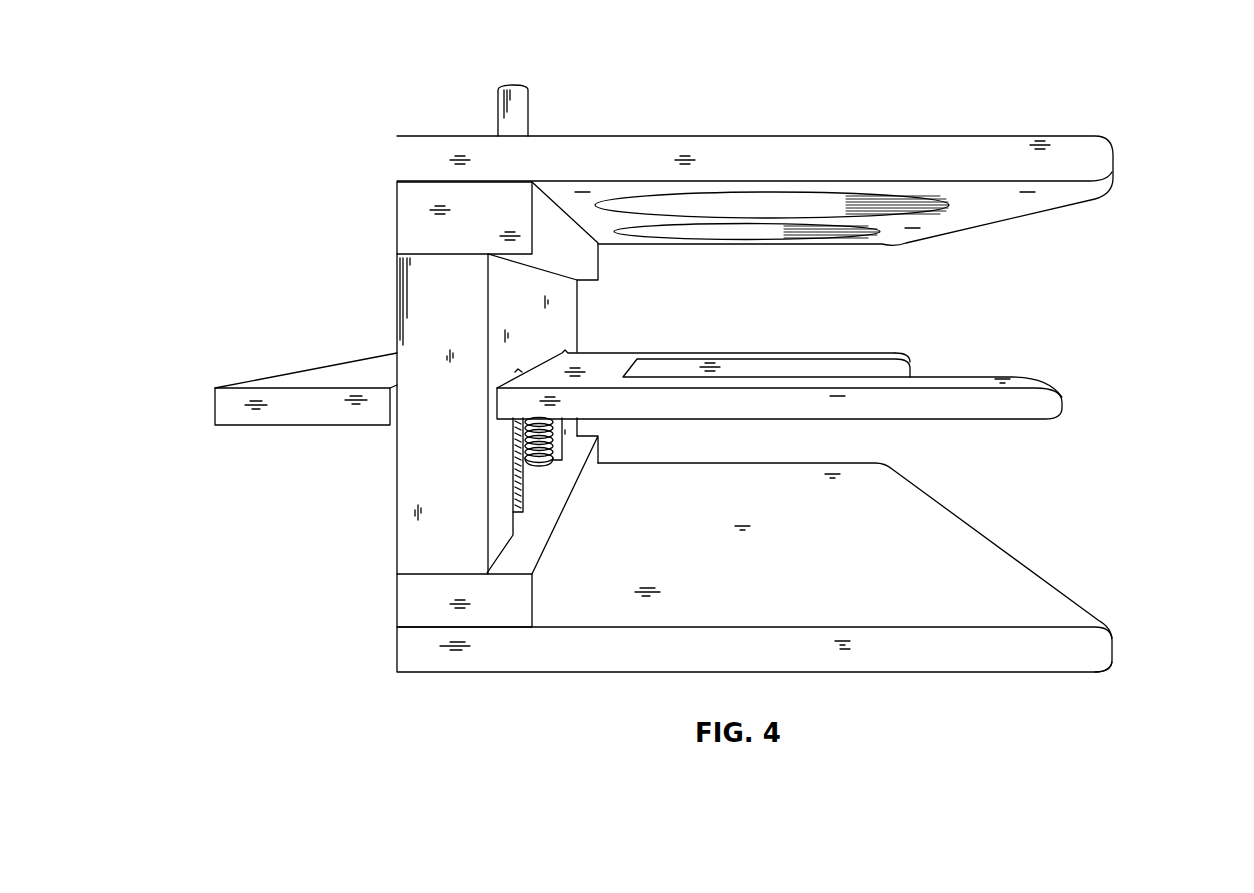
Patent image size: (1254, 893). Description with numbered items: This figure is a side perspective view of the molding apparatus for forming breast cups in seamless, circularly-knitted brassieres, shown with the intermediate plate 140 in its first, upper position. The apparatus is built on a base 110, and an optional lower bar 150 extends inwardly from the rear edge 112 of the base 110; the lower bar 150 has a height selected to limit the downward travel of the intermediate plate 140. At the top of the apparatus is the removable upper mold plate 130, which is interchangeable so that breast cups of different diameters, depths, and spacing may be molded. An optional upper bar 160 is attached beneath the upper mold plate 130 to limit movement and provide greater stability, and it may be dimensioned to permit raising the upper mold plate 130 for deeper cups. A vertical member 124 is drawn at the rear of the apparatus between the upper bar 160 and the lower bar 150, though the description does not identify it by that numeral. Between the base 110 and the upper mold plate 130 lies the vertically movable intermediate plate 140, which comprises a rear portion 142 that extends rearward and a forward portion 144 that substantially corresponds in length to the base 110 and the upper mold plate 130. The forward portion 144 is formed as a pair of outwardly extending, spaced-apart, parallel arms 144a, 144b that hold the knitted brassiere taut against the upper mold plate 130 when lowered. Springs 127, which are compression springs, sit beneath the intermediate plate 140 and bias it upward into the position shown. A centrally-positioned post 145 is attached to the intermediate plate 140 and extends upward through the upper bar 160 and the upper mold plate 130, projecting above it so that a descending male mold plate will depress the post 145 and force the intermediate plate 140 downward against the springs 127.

The base 110 is at (1078, 647).
The rear edge 112 is at (393, 650).
The vertical support column 124 is at (432, 255).
The springs 127 is at (538, 467).
The upper mold plate 130 is at (612, 152).
The intermediate plate 140 is at (1052, 397).
The rear portion 142 is at (295, 412).
The forward portion 144 is at (598, 360).
The arm 144a is at (975, 380).
The arm 144b is at (876, 355).
The centrally-positioned post 145 is at (522, 97).
The lower bar 150 is at (405, 602).
The upper bar 160 is at (405, 214).